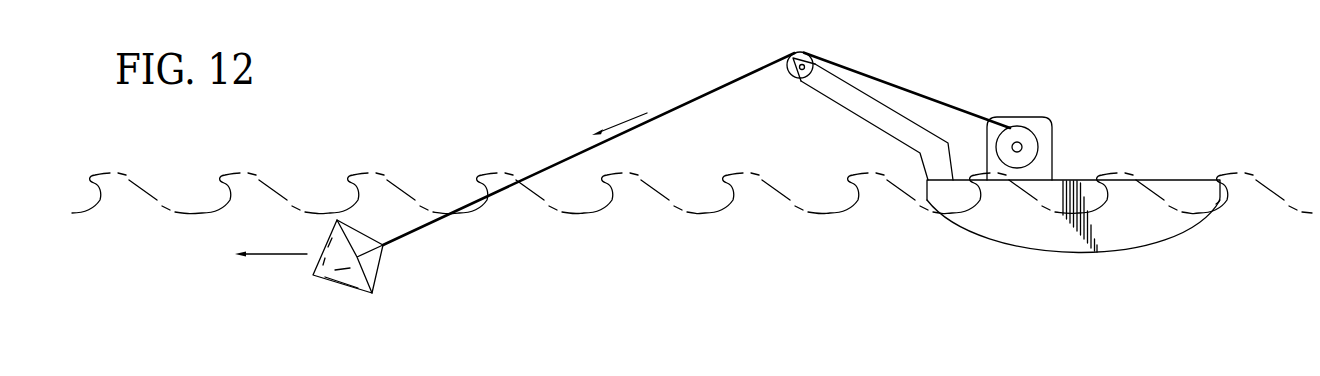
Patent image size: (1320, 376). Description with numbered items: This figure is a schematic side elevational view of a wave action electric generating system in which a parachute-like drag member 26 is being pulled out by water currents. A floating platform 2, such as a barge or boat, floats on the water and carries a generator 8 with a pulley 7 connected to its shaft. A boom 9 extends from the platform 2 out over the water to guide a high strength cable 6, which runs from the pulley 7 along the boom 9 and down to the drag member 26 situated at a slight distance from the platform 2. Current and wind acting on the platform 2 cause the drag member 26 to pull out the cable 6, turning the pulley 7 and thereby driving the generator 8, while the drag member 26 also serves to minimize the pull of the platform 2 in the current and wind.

The floating platform 2 is at (1150, 227).
The cable 6 is at (887, 83).
The pulley 7 is at (1035, 147).
The generator 8 is at (1023, 108).
The boom 9 is at (835, 92).
The parachute-like drag member 26 is at (347, 272).